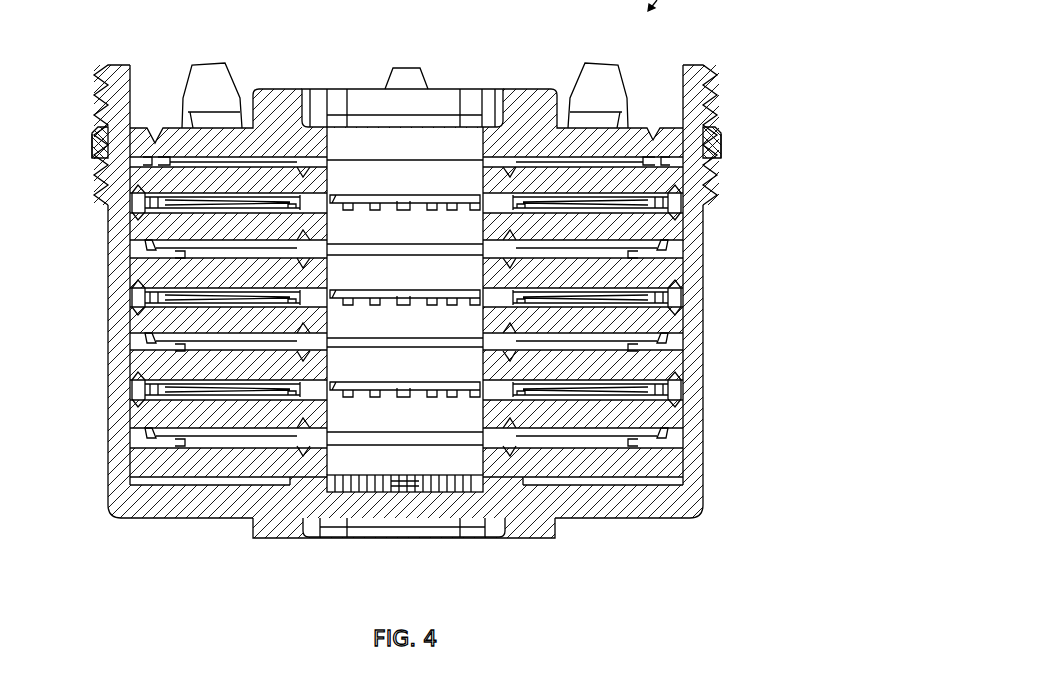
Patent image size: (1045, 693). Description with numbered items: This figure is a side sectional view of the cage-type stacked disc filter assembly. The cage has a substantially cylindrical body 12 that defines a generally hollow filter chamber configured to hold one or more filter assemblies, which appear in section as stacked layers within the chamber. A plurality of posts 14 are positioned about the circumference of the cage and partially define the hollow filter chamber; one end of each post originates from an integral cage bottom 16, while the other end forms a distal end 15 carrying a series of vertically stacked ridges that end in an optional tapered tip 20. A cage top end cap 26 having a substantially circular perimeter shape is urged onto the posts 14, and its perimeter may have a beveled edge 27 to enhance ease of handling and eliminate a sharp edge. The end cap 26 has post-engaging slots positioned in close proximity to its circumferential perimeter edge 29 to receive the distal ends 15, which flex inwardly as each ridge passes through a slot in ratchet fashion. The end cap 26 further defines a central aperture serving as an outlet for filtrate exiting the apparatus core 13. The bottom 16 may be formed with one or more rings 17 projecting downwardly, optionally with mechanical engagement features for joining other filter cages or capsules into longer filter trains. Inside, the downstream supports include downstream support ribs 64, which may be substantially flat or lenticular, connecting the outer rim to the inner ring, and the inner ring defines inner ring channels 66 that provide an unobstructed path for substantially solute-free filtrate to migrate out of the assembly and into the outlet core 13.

The cylindrical body 12 is at (417, 307).
The apparatus core 13 is at (458, 428).
The posts 14 is at (108, 300).
The distal ends of posts 15 is at (133, 87).
The integral cage bottom 16 is at (638, 518).
The rings 17 is at (253, 519).
The tapered tip 20 is at (218, 73).
The cage top end cap 26 is at (606, 149).
The beveled edge 27 is at (102, 130).
The perimeter edge 29 is at (92, 145).
The downstream support ribs 64 is at (233, 298).
The inner ring channels 66 is at (388, 391).